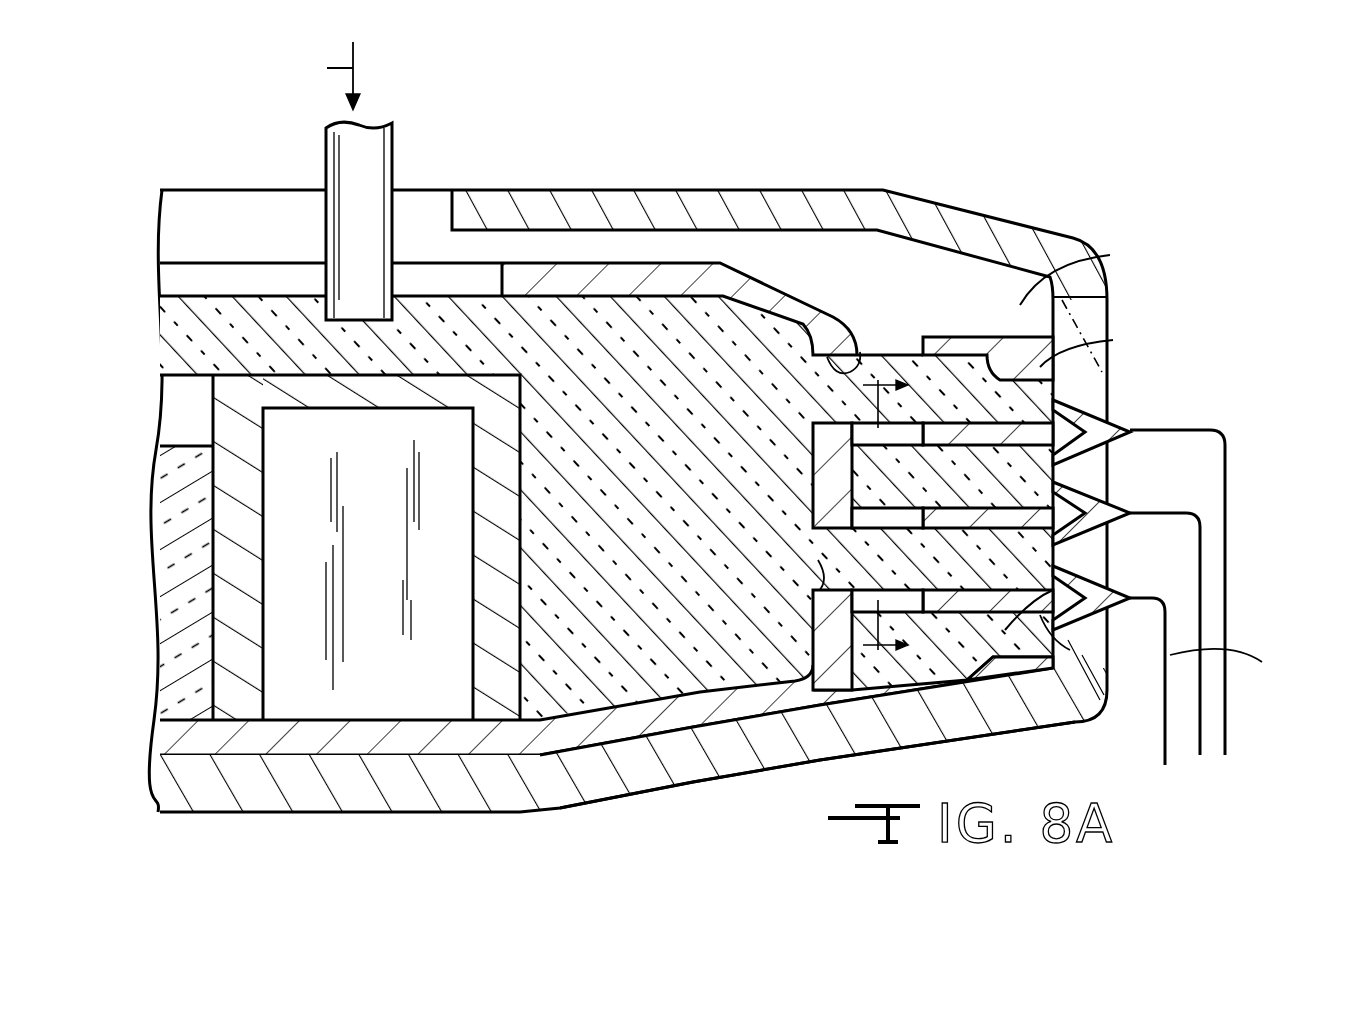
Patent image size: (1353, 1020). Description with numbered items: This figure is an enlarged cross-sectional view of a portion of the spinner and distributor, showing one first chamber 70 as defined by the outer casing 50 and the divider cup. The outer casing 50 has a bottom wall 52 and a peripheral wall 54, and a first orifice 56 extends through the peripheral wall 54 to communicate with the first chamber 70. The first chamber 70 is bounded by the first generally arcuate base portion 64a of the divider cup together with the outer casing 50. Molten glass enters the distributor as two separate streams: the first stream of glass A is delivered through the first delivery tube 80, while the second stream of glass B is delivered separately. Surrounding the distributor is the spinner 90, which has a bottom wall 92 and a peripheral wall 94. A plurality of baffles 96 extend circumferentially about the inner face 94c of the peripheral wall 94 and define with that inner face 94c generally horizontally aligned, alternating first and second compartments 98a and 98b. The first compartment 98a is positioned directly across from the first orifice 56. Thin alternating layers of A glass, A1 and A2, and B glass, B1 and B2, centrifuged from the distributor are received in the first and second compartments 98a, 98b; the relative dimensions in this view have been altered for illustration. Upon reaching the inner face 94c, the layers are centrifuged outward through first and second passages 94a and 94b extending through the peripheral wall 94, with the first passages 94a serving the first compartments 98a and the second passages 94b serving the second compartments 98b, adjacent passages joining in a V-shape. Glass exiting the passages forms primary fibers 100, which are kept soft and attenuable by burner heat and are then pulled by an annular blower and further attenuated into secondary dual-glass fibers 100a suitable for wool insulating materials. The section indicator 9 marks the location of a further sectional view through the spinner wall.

The section line 9- 9 is at (900, 519).
The outer casing 50 is at (343, 745).
The bottom wall 52 is at (253, 748).
The peripheral wall 54 is at (830, 332).
The first orifices 56 is at (860, 368).
The first generally arcuate base portion 64a is at (472, 690).
The first chamber 70 is at (606, 700).
The first delivery tube 80 is at (395, 155).
The spinner 90 is at (962, 228).
The bottom wall 92 is at (660, 775).
The peripheral wall 94 is at (1093, 312).
The first passages 94a is at (1033, 373).
The second passages 94b is at (1120, 467).
The inner face 94c is at (1057, 297).
The baffles 96 is at (1110, 255).
The first compartments 98a is at (953, 355).
The second compartments 98b is at (1045, 625).
The primary fibers 100 is at (1133, 430).
The secondary dual-glass fibers 100a is at (1195, 738).
The first stream of glass A is at (328, 76).
The layer of A glass A1 is at (968, 414).
The layer of A glass A2 is at (893, 580).
The second stream of glass B is at (198, 588).
The layer of B glass B1 is at (930, 498).
The layer of B glass B2 is at (911, 640).